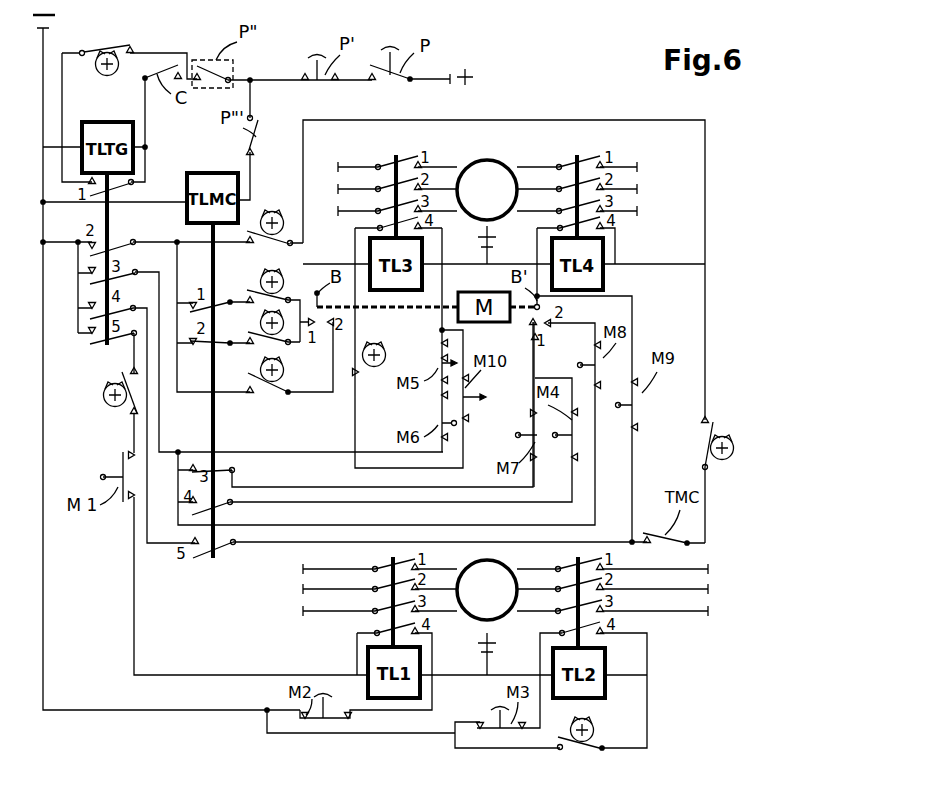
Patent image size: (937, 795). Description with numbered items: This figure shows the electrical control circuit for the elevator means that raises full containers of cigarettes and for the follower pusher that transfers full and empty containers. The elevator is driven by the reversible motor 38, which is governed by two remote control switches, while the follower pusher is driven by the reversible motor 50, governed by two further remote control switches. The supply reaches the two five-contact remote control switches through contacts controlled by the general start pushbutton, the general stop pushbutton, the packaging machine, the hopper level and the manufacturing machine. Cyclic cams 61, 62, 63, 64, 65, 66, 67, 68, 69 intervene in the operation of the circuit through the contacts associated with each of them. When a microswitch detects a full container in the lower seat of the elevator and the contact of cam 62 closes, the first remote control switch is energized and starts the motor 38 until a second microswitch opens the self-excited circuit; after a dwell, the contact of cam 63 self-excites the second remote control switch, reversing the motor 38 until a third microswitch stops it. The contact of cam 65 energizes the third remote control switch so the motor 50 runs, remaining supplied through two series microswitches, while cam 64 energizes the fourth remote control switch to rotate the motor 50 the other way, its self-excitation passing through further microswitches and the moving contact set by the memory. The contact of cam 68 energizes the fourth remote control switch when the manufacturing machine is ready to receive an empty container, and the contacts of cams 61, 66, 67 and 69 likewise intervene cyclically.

The motor 38 is at (492, 608).
The motor 50 is at (488, 168).
The cam 61 is at (98, 76).
The cam 62 is at (112, 410).
The cam 63 is at (593, 731).
The cam 64 is at (276, 213).
The cam 65 is at (261, 284).
The cam 66 is at (261, 326).
The cam 67 is at (286, 374).
The cam 68 is at (722, 460).
The cam 69 is at (380, 345).